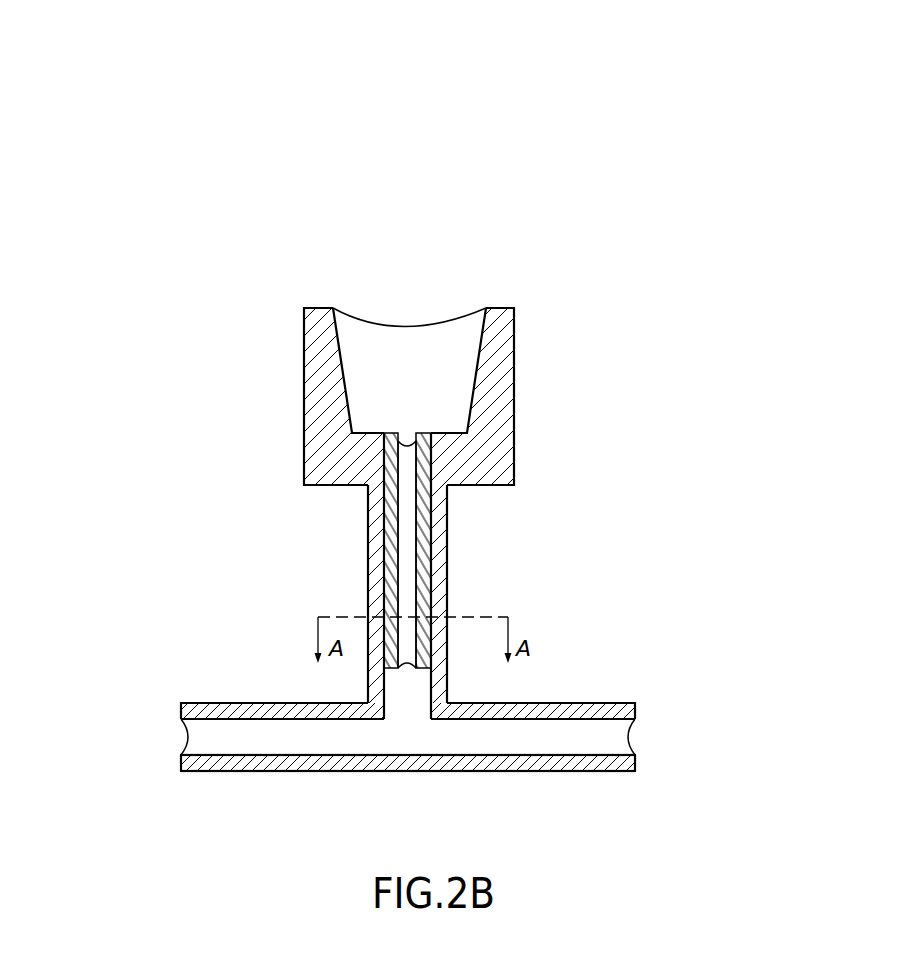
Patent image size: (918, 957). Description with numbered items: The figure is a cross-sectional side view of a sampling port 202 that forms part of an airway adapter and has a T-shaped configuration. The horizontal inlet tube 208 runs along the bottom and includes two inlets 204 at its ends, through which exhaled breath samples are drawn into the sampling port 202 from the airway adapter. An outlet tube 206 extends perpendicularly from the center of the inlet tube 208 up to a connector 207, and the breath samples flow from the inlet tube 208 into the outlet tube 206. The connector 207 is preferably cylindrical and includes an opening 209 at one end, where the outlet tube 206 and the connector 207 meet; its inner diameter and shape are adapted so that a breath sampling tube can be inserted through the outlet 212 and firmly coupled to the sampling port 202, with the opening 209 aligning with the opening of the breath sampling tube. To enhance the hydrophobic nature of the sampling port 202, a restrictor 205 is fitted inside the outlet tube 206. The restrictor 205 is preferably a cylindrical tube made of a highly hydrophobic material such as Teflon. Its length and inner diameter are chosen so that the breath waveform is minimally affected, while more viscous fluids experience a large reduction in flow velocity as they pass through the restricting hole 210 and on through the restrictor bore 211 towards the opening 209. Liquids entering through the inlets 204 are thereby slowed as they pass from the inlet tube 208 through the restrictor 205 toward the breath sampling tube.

The sampling port 202 is at (622, 80).
The inlets 204 is at (168, 737).
The restrictor 205 is at (392, 549).
The outlet tube 206 is at (447, 600).
The connector 207 is at (523, 388).
The inlet tube 208 is at (538, 702).
The opening 209 is at (405, 410).
The restricting hole 210 is at (398, 667).
The restrictor bore 211 is at (407, 523).
The outlet 212 is at (455, 265).